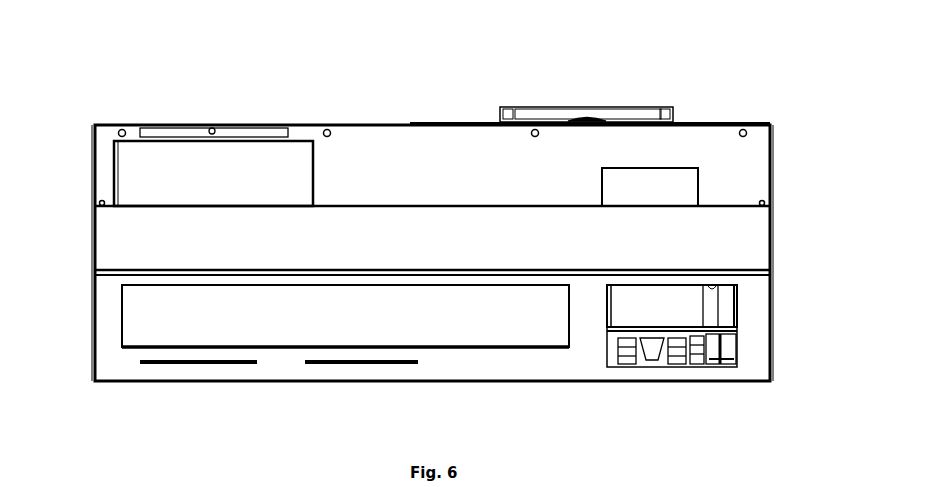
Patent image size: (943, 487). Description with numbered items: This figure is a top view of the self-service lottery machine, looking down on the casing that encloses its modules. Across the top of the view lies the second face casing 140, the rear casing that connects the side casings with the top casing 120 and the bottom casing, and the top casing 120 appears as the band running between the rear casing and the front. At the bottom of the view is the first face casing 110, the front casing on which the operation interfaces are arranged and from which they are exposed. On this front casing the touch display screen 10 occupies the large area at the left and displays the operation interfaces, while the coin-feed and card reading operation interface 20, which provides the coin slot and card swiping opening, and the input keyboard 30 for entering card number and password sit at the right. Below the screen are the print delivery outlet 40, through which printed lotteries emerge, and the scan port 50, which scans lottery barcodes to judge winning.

The touch display screen 10 is at (143, 313).
The coin-feed and card reading operation interface 20 is at (697, 305).
The input keyboard 30 is at (666, 367).
The print delivery outlet 40 is at (197, 365).
The scan port 50 is at (356, 365).
The first face casing 110 is at (497, 365).
The top casing 120 is at (698, 238).
The second face casing 140 is at (404, 165).